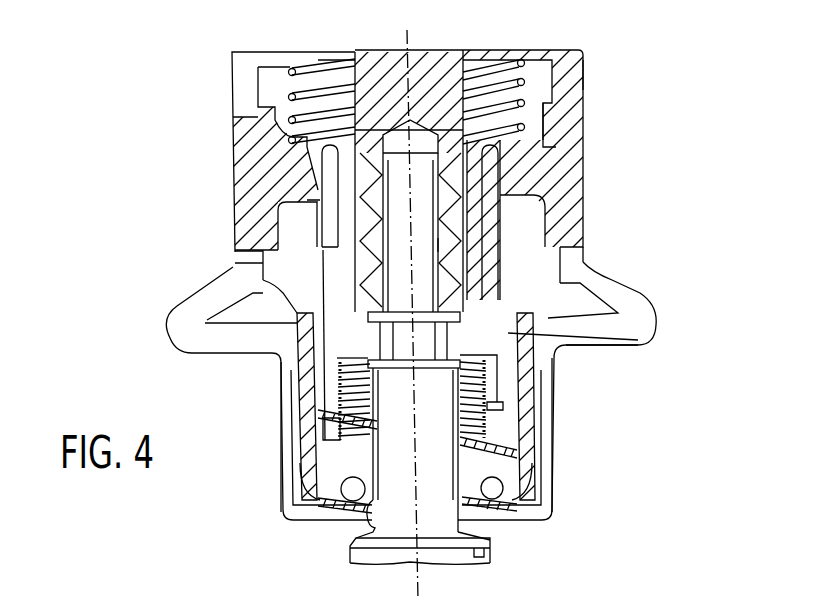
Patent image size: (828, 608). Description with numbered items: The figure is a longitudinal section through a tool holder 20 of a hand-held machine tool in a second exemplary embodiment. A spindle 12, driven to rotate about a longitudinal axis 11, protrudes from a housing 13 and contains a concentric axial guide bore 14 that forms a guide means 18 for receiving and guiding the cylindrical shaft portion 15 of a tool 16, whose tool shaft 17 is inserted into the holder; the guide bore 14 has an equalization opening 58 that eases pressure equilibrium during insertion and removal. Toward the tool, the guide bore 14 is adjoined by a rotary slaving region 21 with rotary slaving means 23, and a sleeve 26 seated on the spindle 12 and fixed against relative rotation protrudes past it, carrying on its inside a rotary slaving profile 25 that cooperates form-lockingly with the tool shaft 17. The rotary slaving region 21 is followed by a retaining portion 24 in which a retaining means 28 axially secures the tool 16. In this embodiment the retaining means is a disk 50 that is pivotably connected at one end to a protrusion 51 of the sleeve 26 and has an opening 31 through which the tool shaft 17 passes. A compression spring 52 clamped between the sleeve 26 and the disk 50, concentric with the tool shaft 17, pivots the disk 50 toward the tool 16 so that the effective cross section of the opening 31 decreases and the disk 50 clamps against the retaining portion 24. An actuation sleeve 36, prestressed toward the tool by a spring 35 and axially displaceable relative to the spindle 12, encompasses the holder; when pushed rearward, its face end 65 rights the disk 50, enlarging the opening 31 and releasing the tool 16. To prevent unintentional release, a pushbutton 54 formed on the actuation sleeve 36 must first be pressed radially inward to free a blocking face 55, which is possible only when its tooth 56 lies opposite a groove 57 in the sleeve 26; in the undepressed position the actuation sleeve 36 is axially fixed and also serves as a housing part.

The longitudinal axis 11 is at (408, 35).
The spindle 12 is at (556, 175).
The housing 13 is at (250, 52).
The guide bore 14 is at (556, 147).
The shaft portion 15 is at (465, 222).
The tool 16 is at (483, 551).
The tool shaft 17 is at (370, 527).
The guide means 18 is at (460, 245).
The tool holder 20 is at (178, 176).
The rotary slaving region 21 is at (297, 365).
The rotary slaving means 23 is at (343, 319).
The retaining portion 24 is at (440, 421).
The rotary slaving profile 25 is at (632, 344).
The sleeve 26 is at (583, 268).
The retaining means 28 is at (310, 490).
The opening 31 is at (352, 456).
The spring 35 is at (556, 75).
The actuation sleeve 36 is at (647, 315).
The disk 50 is at (522, 470).
The protrusion 51 is at (333, 388).
The compression spring 52 is at (490, 387).
The pushbutton 54 is at (236, 207).
The blocking face 55 is at (255, 115).
The tooth 56 is at (303, 190).
The groove 57 is at (236, 261).
The equalization opening 58 is at (470, 105).
The face end 65 is at (540, 508).